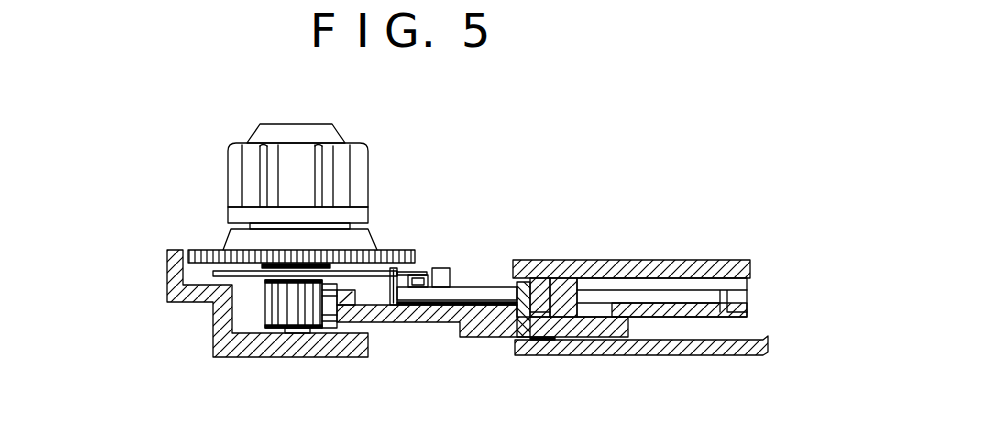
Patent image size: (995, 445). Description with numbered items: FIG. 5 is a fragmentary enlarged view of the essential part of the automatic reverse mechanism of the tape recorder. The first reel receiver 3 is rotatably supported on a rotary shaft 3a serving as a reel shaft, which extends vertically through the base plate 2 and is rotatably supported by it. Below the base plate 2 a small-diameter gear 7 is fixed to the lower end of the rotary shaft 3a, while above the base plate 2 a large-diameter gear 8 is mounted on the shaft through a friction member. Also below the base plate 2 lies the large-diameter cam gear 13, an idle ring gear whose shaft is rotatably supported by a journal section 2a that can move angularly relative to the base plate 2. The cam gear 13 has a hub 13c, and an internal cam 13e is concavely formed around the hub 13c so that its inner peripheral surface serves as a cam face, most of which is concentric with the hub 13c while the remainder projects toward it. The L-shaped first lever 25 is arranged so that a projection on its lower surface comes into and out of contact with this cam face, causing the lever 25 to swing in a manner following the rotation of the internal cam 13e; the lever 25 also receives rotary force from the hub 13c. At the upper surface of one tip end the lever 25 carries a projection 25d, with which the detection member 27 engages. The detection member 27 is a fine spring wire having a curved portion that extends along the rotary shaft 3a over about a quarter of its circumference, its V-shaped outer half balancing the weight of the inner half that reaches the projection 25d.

The base plate 2 is at (682, 260).
The journal section 2a is at (586, 260).
The first reel receiver 3 is at (228, 168).
The rotary shaft 3a is at (262, 283).
The small-diameter gear 7 is at (262, 315).
The large-diameter gear 8 is at (200, 249).
The cam gear 13 is at (425, 323).
The hub 13c is at (586, 323).
The internal cam 13e is at (494, 324).
The first lever 25 is at (485, 288).
The projection 25d is at (391, 306).
The detection member 27 is at (420, 270).